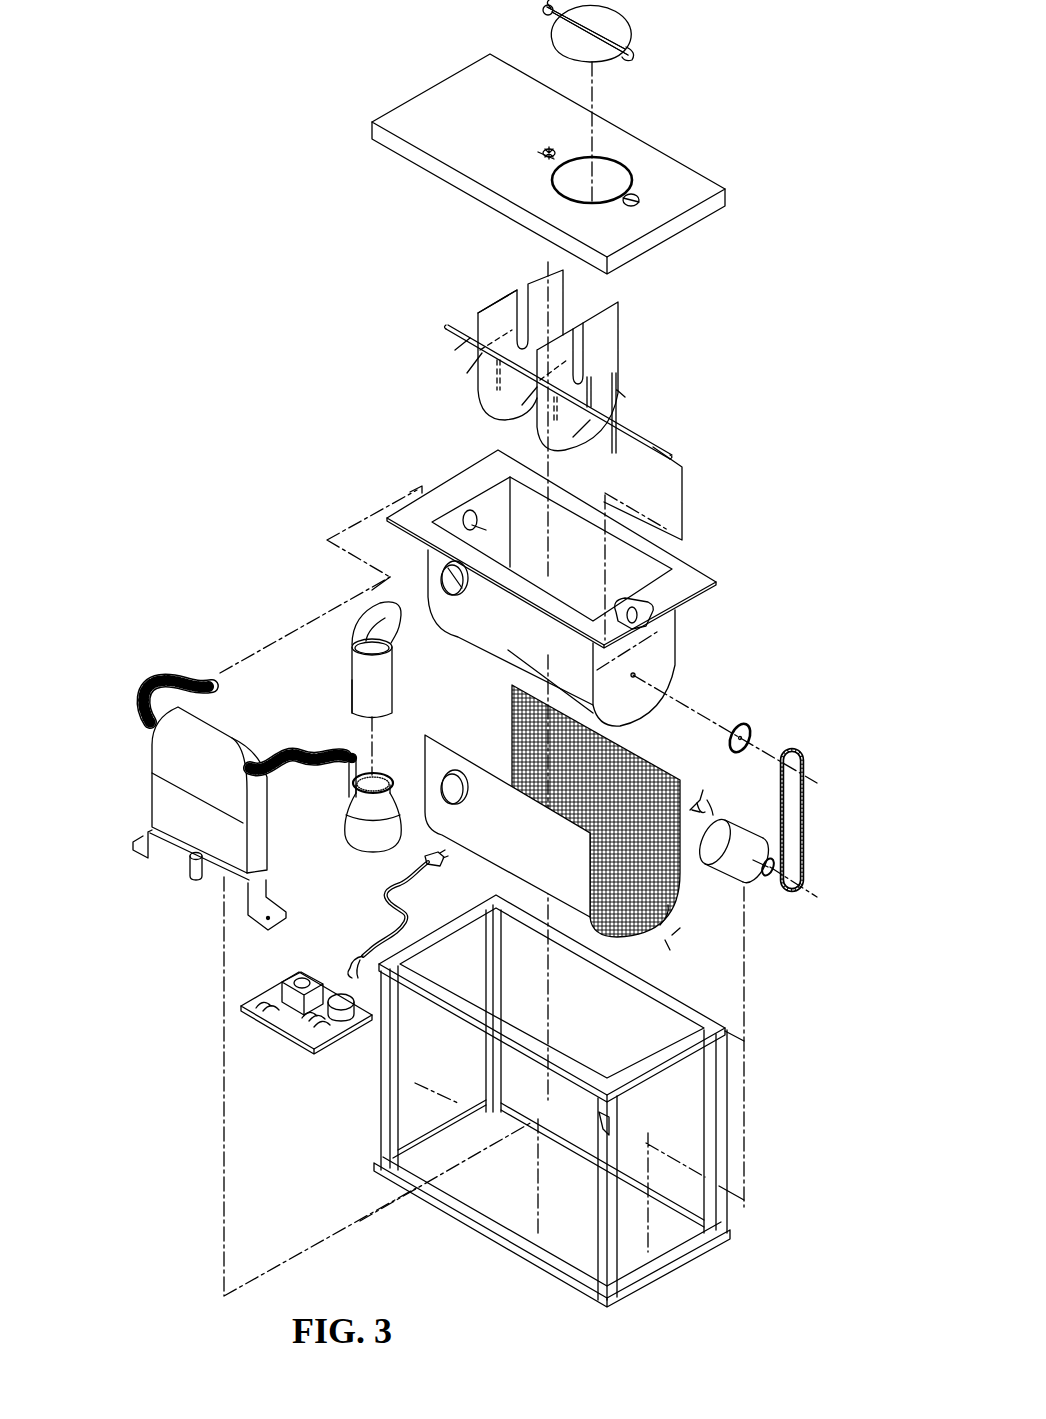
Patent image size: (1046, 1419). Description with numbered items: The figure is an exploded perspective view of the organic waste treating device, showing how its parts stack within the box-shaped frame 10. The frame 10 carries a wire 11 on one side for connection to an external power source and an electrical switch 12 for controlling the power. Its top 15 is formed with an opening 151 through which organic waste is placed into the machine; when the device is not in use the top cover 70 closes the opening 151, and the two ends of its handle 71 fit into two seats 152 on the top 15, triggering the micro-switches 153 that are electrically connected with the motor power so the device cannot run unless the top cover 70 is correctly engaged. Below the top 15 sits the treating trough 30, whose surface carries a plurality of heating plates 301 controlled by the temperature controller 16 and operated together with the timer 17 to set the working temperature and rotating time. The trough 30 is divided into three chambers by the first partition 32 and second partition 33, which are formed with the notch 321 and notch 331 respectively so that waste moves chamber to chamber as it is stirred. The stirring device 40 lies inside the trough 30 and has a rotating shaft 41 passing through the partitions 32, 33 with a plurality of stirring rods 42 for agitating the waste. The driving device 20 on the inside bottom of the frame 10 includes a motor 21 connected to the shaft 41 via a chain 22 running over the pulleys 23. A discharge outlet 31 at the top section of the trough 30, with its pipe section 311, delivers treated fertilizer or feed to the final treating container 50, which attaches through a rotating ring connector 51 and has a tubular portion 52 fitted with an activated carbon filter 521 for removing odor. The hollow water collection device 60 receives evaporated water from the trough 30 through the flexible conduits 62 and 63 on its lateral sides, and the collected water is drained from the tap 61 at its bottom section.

The frame 10 is at (504, 1258).
The wire 11 is at (413, 888).
The electrical switch 12 is at (604, 1135).
The top 15 is at (697, 172).
The opening 151 is at (622, 165).
The seats 152 is at (547, 147).
The micro-switches 153 is at (546, 160).
The temperature controller 16 is at (342, 1020).
The timer 17 is at (300, 970).
The driving device 20 is at (781, 939).
The motor 21 is at (732, 822).
The chain 22 is at (805, 840).
The pulley 23 is at (745, 722).
The treating trough 30 is at (698, 578).
The heating plates 301 is at (660, 920).
The discharge outlet 31 is at (355, 612).
The pipe section 311 is at (357, 692).
The first partition 32 is at (622, 334).
The notch 321 is at (576, 330).
The second partition 33 is at (522, 300).
The notch 331 is at (495, 303).
The stirring device 40 is at (571, 355).
The rotating shaft 41 is at (632, 427).
The stirring rods 42 is at (635, 407).
The final treating container 50 is at (350, 845).
The rotating ring connector 51 is at (388, 775).
The tubular portion 52 is at (345, 788).
The activated carbon filter 521 is at (349, 754).
The water collection device 60 is at (152, 812).
The tap 61 is at (193, 882).
The flexible conduit 62 is at (280, 750).
The flexible conduit 63 is at (152, 685).
The top cover 70 is at (627, 27).
The handle 71 is at (600, 45).